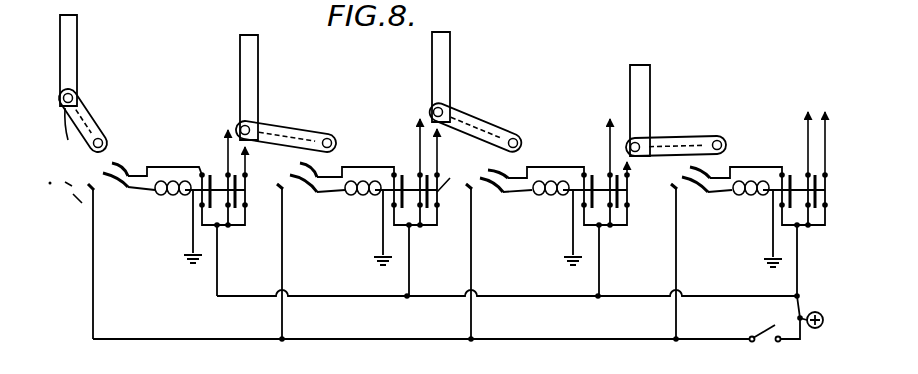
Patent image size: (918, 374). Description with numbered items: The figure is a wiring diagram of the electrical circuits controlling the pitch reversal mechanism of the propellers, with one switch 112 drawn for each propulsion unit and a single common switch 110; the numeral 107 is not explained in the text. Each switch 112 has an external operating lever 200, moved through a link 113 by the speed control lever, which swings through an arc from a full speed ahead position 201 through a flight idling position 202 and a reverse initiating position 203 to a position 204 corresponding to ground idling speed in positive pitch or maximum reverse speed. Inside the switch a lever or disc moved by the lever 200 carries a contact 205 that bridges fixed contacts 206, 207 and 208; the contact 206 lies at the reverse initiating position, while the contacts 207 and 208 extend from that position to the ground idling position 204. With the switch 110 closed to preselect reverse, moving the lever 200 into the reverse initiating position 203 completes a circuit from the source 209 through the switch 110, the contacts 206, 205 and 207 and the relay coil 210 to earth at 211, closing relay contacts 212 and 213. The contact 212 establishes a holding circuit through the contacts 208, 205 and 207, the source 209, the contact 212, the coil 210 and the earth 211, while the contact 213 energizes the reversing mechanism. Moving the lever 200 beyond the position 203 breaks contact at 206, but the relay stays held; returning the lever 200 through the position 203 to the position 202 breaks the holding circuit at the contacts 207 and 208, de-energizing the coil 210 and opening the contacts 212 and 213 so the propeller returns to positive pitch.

The control unit 107 is at (503, 7).
The switch 110 is at (753, 332).
The switch 112 is at (131, 110).
The link 113 is at (648, 70).
The external operating lever 200 is at (432, 112).
The full speed ahead position 201 is at (672, 90).
The flight idling position 202 is at (650, 181).
The reverse initiating position 203 is at (663, 200).
The ground idling position 204 is at (707, 238).
The contact 205 is at (103, 100).
The fixed contact 206 is at (472, 187).
The fixed contact 207 is at (490, 180).
The fixed contact 208 is at (508, 175).
The source 209 is at (797, 298).
The relay coil 210 is at (170, 198).
The earth 211 is at (193, 264).
The relay contact 212 is at (202, 175).
The relay contact 213 is at (236, 174).